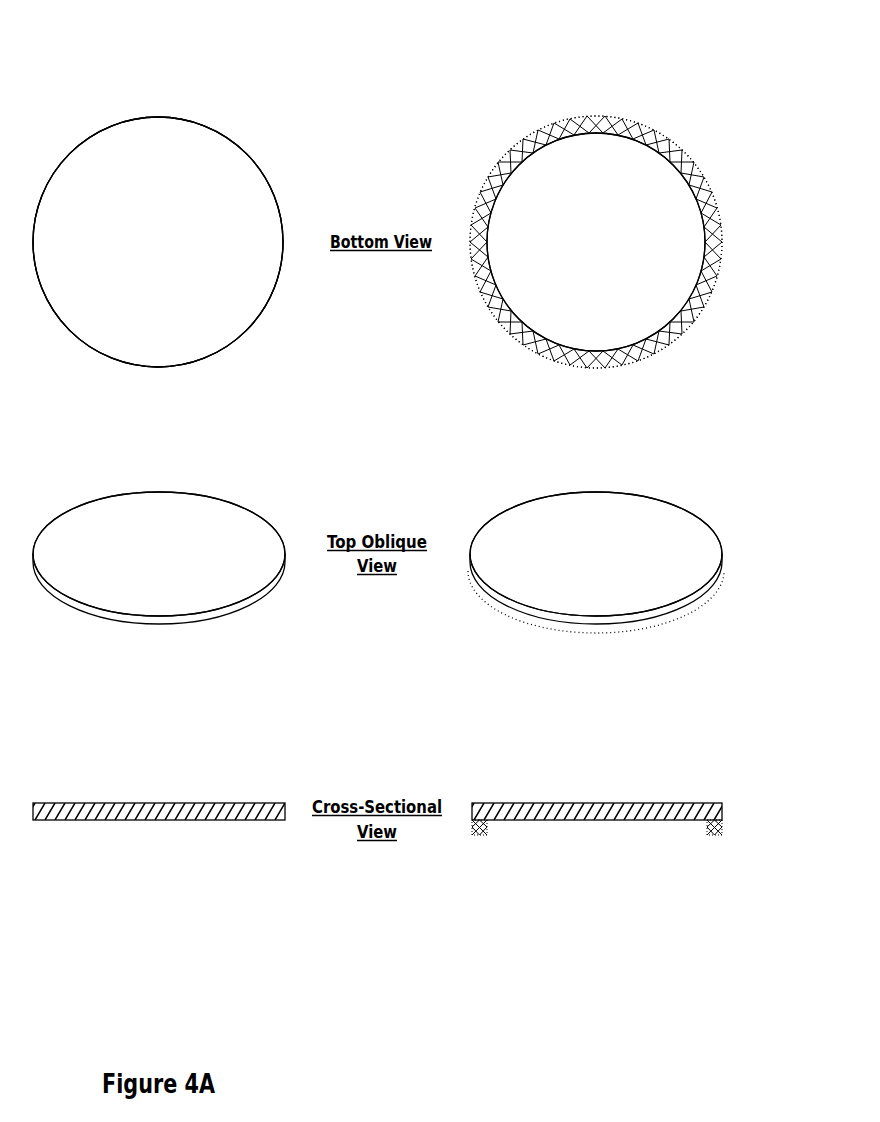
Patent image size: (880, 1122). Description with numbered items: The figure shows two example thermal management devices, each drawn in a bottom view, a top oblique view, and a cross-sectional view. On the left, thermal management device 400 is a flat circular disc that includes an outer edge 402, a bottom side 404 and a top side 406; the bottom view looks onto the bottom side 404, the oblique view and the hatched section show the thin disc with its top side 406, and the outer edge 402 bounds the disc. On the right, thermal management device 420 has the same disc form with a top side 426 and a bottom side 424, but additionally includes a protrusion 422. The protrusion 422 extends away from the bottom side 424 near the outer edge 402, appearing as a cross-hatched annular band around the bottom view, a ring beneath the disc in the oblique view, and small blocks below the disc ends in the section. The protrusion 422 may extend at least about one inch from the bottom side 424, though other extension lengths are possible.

The thermal management device 400 is at (155, 66).
The outer edge 402 is at (251, 153).
The bottom side 404 is at (182, 253).
The top side 406 is at (178, 565).
The thermal management device 420 is at (591, 66).
The protrusion 422 is at (702, 177).
The bottom side 424 is at (618, 255).
The top side 426 is at (618, 565).